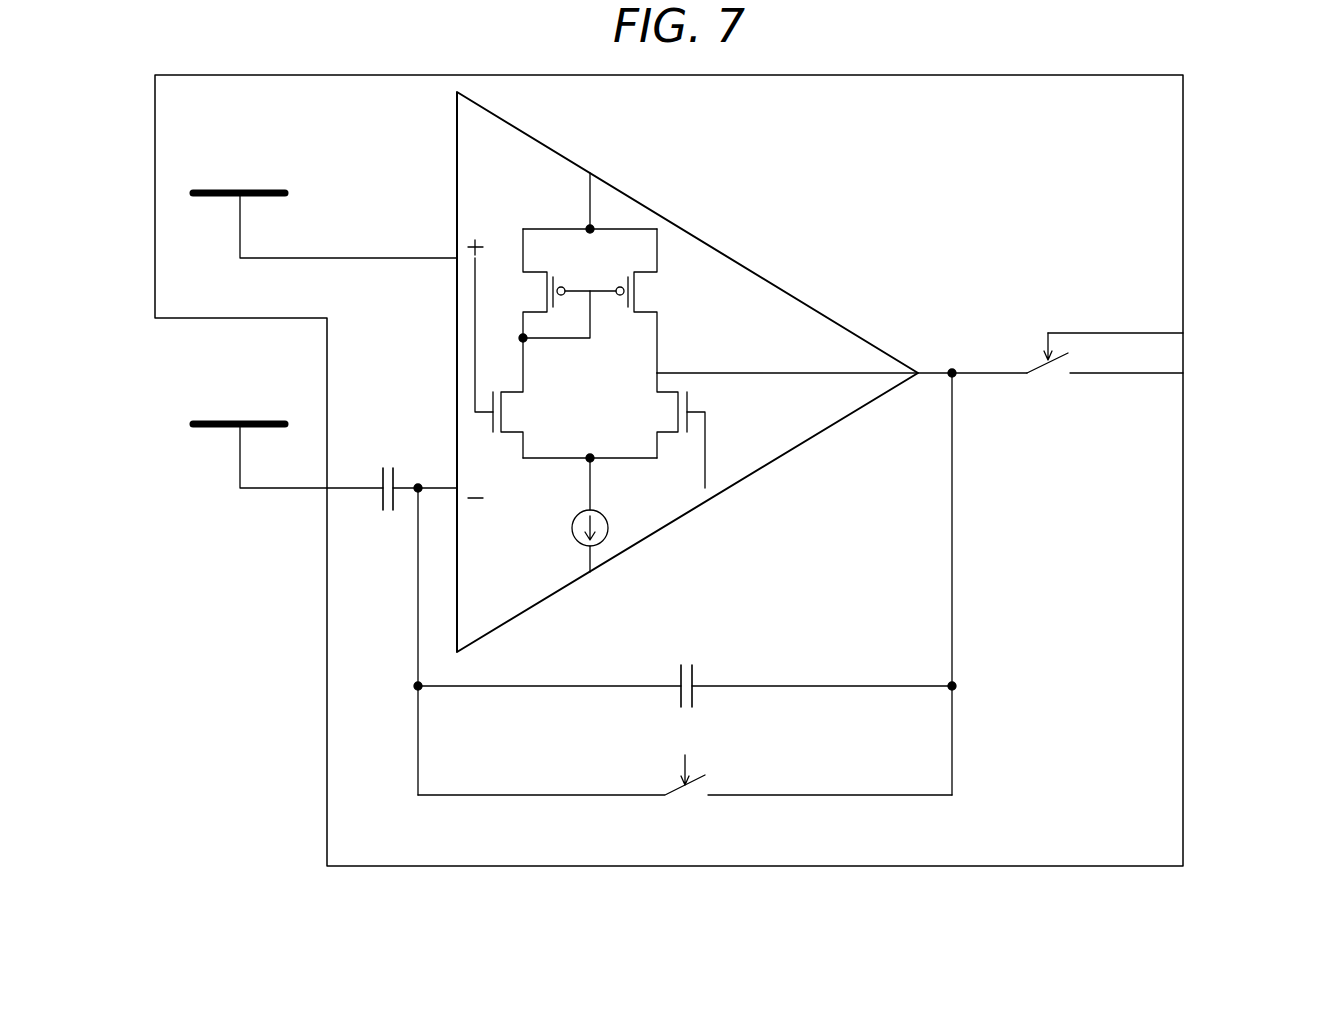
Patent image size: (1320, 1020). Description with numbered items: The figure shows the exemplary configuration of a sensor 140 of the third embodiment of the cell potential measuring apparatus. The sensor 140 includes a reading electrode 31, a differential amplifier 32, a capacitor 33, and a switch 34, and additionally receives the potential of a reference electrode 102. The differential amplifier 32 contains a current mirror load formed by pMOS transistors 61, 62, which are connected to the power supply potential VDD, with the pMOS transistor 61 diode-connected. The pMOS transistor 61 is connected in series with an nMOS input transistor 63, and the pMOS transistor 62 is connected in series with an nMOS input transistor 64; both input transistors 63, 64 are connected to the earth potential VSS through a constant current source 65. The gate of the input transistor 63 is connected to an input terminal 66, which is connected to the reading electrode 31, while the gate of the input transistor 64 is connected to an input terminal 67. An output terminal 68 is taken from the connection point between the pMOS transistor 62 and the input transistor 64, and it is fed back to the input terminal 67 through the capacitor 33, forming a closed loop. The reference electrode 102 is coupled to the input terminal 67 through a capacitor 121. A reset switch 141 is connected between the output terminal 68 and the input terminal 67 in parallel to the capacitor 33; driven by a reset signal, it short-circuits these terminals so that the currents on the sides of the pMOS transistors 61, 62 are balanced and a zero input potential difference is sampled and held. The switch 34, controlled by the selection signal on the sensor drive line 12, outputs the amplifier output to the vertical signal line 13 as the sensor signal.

The sensor drive line 12 is at (1136, 332).
The vertical signal line 13 is at (1137, 375).
The reading electrode 31 is at (219, 190).
The differential amplifier 32 is at (740, 262).
The capacitor 33 is at (697, 672).
The switch 34 is at (1058, 362).
The pMOS transistor 61 is at (556, 283).
The pMOS transistor 62 is at (627, 305).
The input transistor 63 is at (493, 422).
The input transistor 64 is at (690, 397).
The constant current source 65 is at (571, 528).
The input terminal 66 is at (456, 257).
The input terminal 67 is at (456, 487).
The output terminal 68 is at (920, 372).
The reference electrode 102 is at (219, 421).
The capacitor 121 is at (383, 500).
The sensor 140 is at (1183, 507).
The reset switch 141 is at (690, 785).